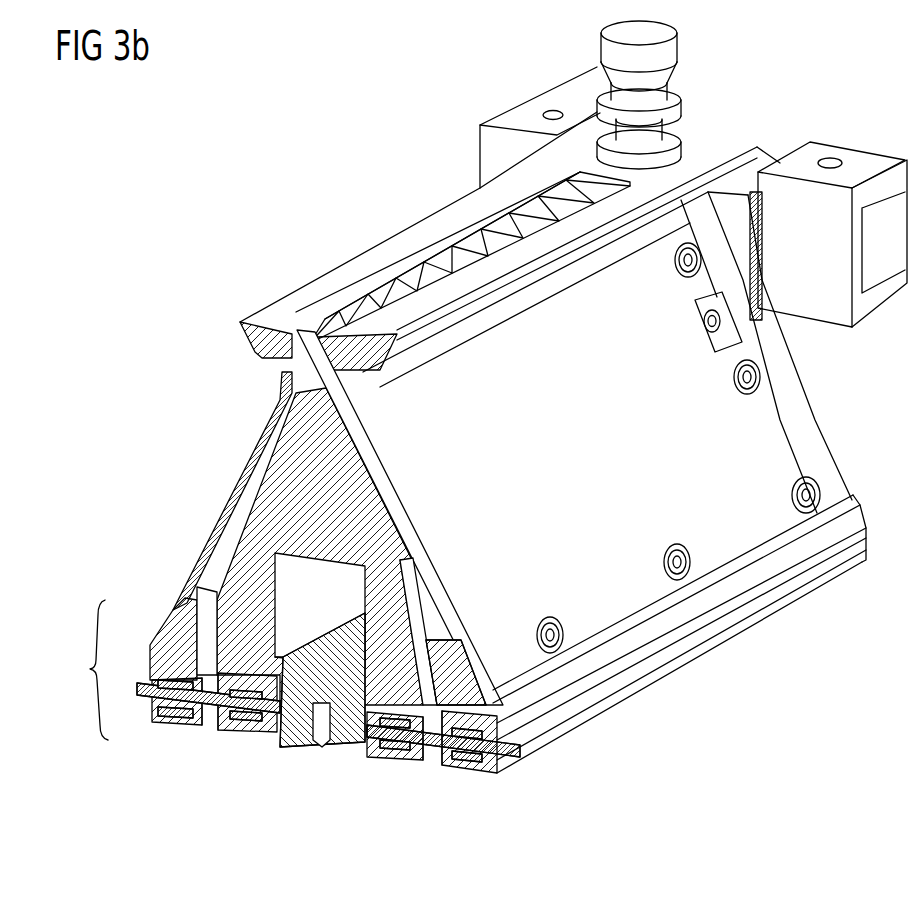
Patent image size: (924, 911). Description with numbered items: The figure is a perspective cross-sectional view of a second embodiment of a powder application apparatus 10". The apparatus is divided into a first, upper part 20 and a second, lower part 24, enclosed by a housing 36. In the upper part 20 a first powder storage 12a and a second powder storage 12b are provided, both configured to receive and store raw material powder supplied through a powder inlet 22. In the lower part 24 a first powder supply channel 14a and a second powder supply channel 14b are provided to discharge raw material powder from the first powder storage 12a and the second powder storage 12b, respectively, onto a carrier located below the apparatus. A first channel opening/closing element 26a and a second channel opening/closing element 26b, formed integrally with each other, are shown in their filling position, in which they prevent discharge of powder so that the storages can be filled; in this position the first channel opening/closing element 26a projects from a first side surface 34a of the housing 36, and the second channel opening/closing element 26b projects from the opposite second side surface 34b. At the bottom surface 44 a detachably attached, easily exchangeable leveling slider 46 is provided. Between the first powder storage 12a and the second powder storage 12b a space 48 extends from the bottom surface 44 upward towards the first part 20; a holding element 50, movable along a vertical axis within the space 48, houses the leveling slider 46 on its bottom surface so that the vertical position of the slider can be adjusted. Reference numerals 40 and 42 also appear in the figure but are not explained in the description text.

The powder application apparatus 10 is at (345, 206).
The powder inlet 22 is at (420, 265).
The first part 20 is at (199, 470).
The first powder storage 12a is at (190, 578).
The second powder storage 12b is at (380, 513).
The first powder supply channel 14a is at (197, 640).
The second powder supply channel 14b is at (455, 645).
The second part 24 is at (85, 670).
The bolt 40 is at (137, 685).
The first side surface 34a is at (148, 705).
The second side surface 34b is at (503, 753).
The first channel opening/closing element 26a is at (213, 723).
The second channel opening/closing element 26b is at (433, 765).
The bottom surface 44 is at (243, 740).
The leveling slider 46 is at (316, 748).
The space 48 is at (352, 598).
The holding element 50 is at (305, 657).
The base rail 42 is at (578, 708).
The housing 36 is at (696, 422).